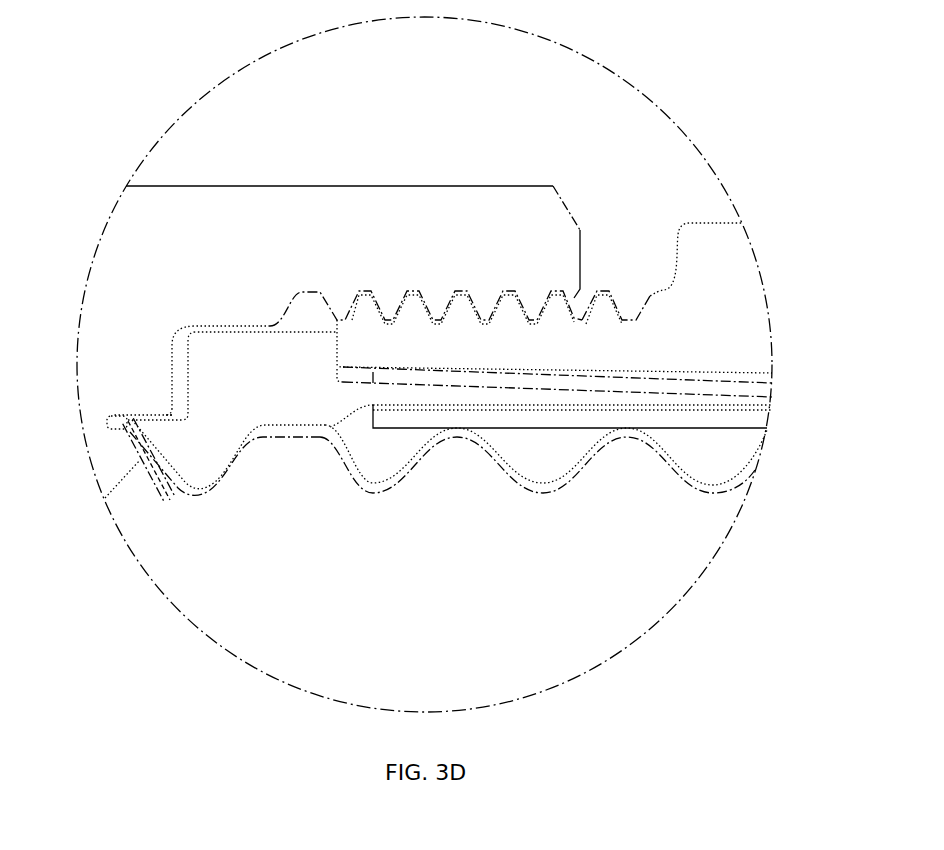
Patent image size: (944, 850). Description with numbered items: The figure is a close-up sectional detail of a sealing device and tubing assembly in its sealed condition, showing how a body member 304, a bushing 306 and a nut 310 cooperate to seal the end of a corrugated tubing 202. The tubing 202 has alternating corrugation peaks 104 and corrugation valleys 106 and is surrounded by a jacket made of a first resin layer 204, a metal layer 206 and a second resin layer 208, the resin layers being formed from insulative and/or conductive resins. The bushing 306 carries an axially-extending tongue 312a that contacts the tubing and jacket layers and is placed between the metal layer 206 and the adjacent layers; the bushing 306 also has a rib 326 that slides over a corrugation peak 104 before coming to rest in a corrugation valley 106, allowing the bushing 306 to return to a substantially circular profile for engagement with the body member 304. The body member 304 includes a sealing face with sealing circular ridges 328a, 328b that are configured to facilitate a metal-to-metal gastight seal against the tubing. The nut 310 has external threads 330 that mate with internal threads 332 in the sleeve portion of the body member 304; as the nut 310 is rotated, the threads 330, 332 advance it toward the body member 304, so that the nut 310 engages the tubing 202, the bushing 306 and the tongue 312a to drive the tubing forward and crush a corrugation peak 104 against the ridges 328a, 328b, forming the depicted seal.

The corrugation peak 104 is at (120, 427).
The corrugation valley 106 is at (210, 493).
The tubing 202 is at (733, 490).
The first resin layer 204 is at (768, 423).
The metal layer 206 is at (770, 408).
The second resin layer 208 is at (773, 383).
The body member 304 is at (311, 223).
The bushing 306 is at (238, 362).
The nut 310 is at (698, 282).
The axially-extending tongue 312a is at (770, 400).
The rib 326 is at (172, 458).
The sealing circular ridge 328a is at (116, 430).
The sealing circular ridge 328b is at (128, 445).
The external threads 330 is at (603, 293).
The internal threads 332 is at (365, 293).